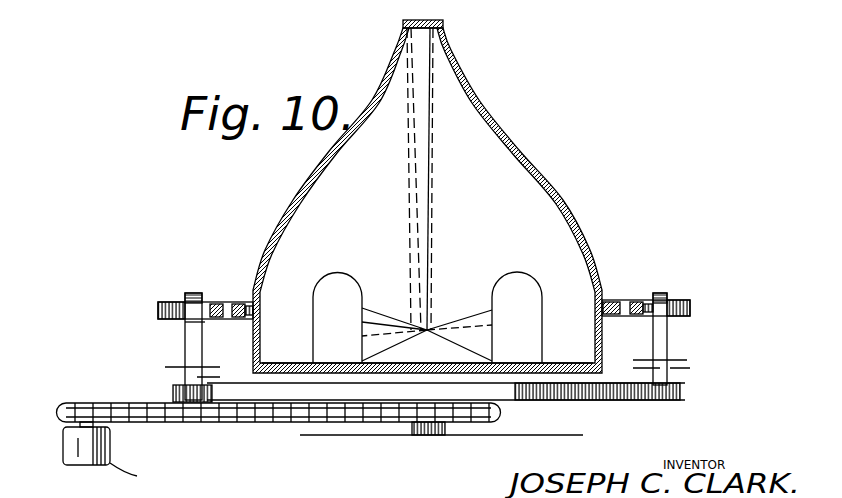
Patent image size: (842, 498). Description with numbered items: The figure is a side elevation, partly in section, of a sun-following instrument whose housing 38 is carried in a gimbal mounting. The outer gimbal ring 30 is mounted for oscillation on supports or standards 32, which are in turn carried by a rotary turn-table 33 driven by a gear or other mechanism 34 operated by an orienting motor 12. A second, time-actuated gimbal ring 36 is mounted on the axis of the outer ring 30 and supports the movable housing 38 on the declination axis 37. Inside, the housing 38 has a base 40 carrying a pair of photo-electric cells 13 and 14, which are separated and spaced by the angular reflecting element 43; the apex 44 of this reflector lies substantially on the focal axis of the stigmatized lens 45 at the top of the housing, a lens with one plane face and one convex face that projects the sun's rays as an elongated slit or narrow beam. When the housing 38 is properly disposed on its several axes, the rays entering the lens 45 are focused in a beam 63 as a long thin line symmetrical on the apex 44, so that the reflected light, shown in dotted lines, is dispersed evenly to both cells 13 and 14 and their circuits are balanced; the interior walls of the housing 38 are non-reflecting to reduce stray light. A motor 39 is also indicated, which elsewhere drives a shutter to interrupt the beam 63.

The motor 12 is at (93, 450).
The photo-electric cell 13 is at (328, 277).
The photo-electric cell 14 is at (537, 259).
The outer gimbal ring 30 is at (217, 302).
The supports or standards 32 is at (193, 336).
The rotary turn-table 33 is at (617, 400).
The gear or other mechanism 34 is at (500, 415).
The second gimbal or time actuated ring 36 is at (228, 302).
The declination axis 37 is at (250, 322).
The housing 38 is at (557, 152).
The motor 39 is at (200, 296).
The base 40 is at (558, 362).
The angular reflecting element 43 is at (427, 348).
The apex 44 is at (428, 330).
The stigmatized lens 45 is at (441, 21).
The beam 63 is at (433, 223).